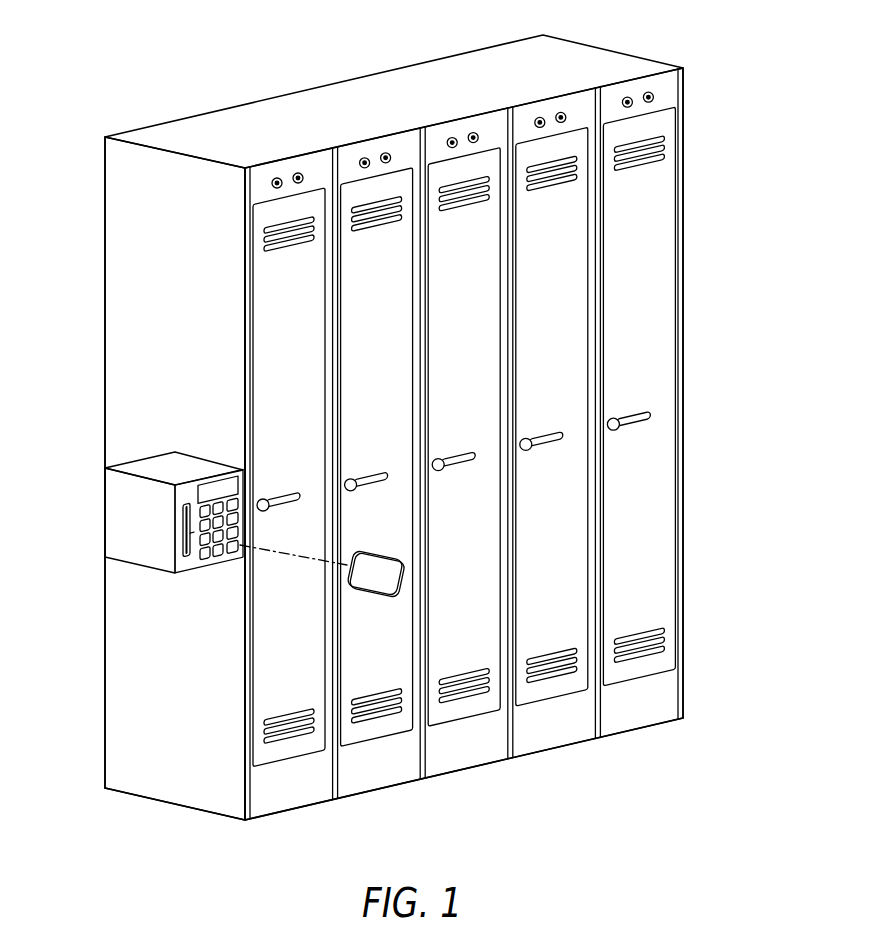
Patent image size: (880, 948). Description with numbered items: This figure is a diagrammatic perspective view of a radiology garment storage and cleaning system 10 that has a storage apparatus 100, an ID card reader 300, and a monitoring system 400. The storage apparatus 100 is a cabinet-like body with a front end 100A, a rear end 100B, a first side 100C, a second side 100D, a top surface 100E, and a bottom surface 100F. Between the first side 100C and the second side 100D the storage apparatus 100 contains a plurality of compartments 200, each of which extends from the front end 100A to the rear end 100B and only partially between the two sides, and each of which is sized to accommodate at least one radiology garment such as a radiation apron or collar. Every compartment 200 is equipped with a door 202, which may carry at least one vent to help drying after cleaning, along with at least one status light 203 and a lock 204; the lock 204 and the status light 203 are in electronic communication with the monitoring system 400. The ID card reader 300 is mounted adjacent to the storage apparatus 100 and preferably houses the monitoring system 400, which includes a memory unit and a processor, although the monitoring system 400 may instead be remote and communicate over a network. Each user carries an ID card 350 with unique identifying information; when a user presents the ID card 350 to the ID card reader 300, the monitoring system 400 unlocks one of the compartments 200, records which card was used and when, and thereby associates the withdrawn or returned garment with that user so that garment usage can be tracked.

The locker system 10 is at (756, 160).
The storage apparatus 100 is at (712, 375).
The front end 100A is at (665, 700).
The rear end 100B is at (105, 193).
The first side 100C is at (140, 283).
The second side 100D is at (683, 178).
The top surface 100E is at (348, 104).
The bottom surface 100F is at (188, 812).
The compartments 200 is at (475, 311).
The door 202 is at (552, 416).
The status light 203 is at (637, 99).
The lock 204 is at (628, 420).
The ID card reader 300 is at (135, 565).
The ID card 350 is at (400, 552).
The monitoring system 400 is at (82, 548).